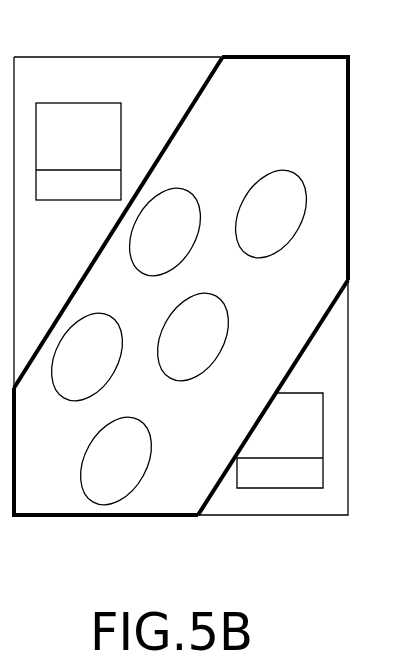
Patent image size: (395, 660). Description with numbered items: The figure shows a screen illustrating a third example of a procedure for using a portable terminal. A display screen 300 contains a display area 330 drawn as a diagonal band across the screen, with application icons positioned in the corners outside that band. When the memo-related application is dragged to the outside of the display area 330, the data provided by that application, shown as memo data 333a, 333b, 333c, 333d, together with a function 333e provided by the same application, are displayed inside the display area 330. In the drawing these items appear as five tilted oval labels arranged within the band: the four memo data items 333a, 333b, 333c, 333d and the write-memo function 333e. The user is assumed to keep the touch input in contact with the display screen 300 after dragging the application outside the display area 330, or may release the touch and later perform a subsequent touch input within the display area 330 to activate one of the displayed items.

The display screen 300 is at (181, 57).
The display area 330 is at (101, 250).
The memo data 333a is at (100, 314).
The memo data 333b is at (178, 188).
The memo data 333c is at (128, 418).
The memo data 333d is at (205, 294).
The memo function 333e is at (279, 171).